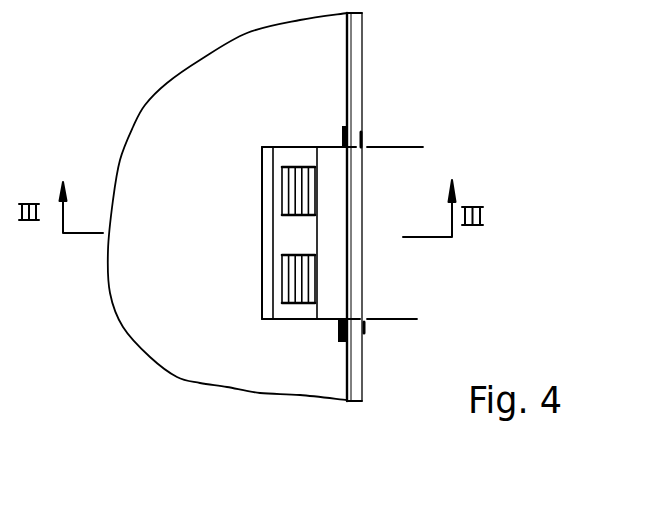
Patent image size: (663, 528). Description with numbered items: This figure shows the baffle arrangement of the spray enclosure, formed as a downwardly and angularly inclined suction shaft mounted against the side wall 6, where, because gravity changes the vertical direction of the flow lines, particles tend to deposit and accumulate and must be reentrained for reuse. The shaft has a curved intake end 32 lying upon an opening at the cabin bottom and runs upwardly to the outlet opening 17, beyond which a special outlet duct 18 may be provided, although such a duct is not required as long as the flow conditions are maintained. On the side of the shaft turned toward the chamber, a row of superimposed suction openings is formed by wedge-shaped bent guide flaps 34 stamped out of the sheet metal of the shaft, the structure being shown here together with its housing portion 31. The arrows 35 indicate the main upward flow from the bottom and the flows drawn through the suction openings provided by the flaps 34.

The side wall 6 is at (357, 104).
The outlet opening 17 is at (356, 210).
The outlet duct 18 is at (422, 188).
The housing cover 31 is at (300, 147).
The curved intake end 32 is at (262, 230).
The guide flaps 34 is at (308, 247).
The arrows 35 is at (257, 189).